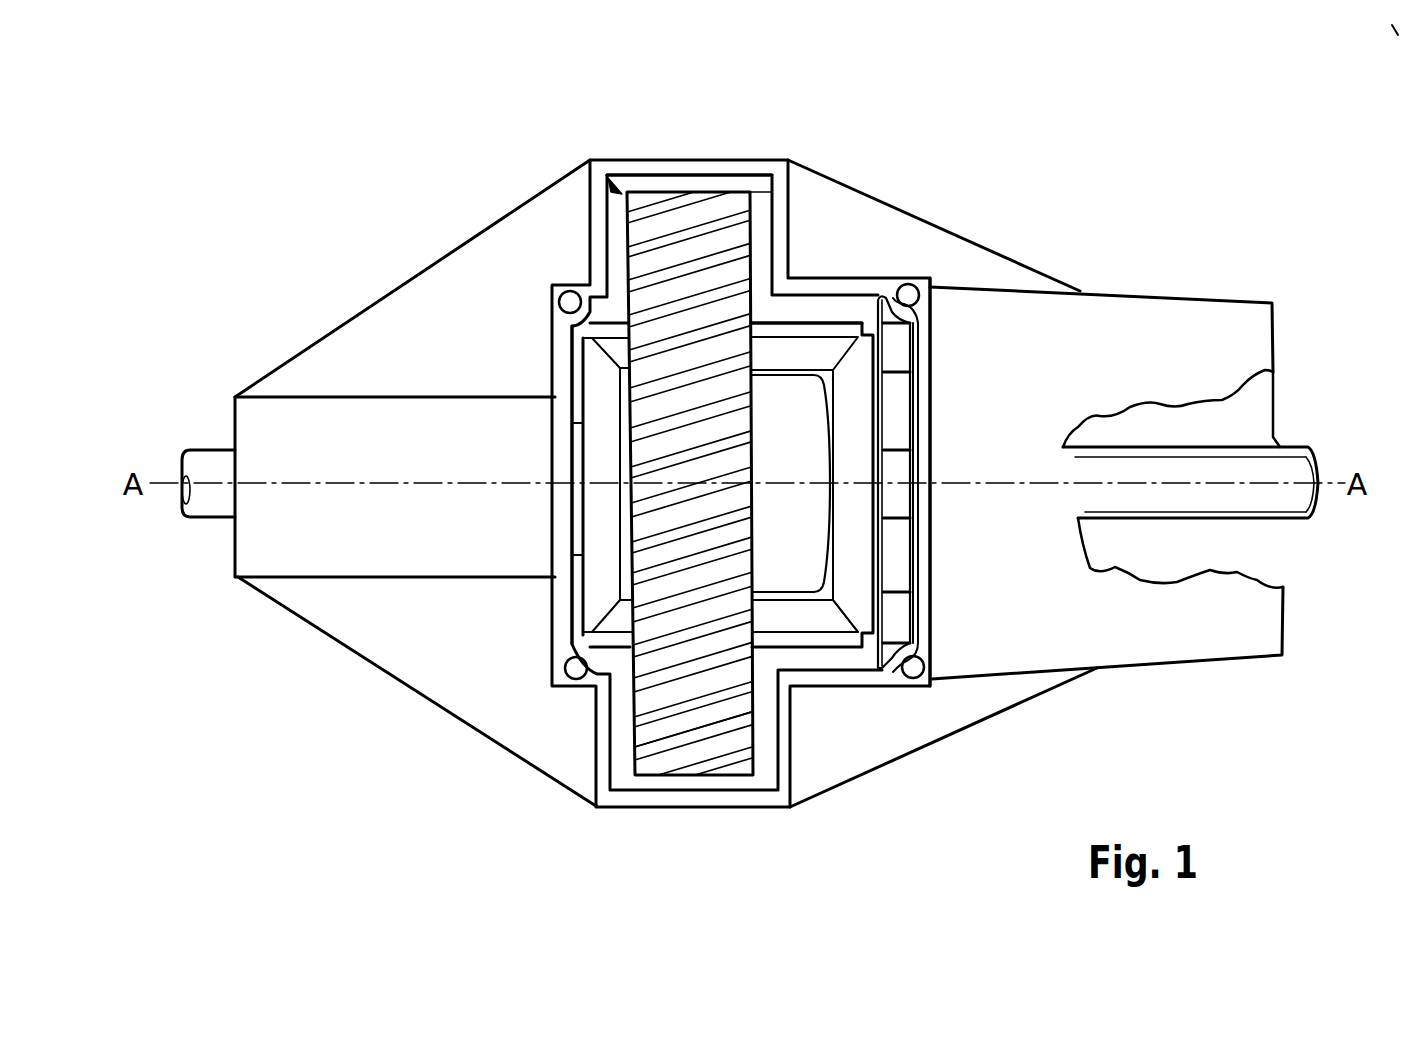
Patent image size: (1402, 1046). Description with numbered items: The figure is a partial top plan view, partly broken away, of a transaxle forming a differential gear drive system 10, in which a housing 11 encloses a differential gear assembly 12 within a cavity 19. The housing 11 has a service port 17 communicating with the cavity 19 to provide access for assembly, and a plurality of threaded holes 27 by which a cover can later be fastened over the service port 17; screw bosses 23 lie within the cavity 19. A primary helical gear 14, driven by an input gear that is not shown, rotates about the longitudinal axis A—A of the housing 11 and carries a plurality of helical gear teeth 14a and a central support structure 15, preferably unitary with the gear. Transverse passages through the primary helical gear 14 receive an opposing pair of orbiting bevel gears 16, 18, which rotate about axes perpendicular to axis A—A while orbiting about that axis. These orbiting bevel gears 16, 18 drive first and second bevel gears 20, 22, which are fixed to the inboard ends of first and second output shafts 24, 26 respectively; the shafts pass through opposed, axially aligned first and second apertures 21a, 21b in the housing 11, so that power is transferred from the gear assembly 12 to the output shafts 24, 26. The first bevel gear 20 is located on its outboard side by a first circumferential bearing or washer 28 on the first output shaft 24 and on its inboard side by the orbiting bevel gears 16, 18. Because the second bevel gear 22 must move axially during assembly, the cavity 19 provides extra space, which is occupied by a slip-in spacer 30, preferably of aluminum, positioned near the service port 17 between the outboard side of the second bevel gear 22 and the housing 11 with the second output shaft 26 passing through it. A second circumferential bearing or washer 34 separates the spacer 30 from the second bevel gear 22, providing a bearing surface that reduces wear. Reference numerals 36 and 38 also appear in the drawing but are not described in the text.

The differential gear drive system 10 is at (350, 172).
The housing 11 is at (1137, 297).
The differential gear assembly 12 is at (590, 162).
The primary helical gear 14 is at (727, 190).
The helical gear teeth 14a is at (655, 745).
The central support structure 15 is at (773, 572).
The orbiting bevel gear 16 is at (795, 322).
The service port 17 is at (657, 174).
The orbiting bevel gear 18 is at (793, 633).
The cavity 19 is at (757, 187).
The first bevel gear 20 is at (572, 360).
The first aperture 21a is at (572, 527).
The second aperture 21b is at (917, 528).
The second bevel gear 22 is at (872, 300).
The screw bosses 23 is at (896, 300).
The first output shaft 24 is at (203, 522).
The second output shaft 26 is at (1293, 447).
The threaded holes 27 is at (552, 286).
The first circumferential bearing or washer 28 is at (568, 516).
The spacer 30 is at (893, 352).
The second circumferential bearing or washer 34 is at (878, 557).
The ring segments 36 is at (897, 410).
The center ring segment 38 is at (900, 473).